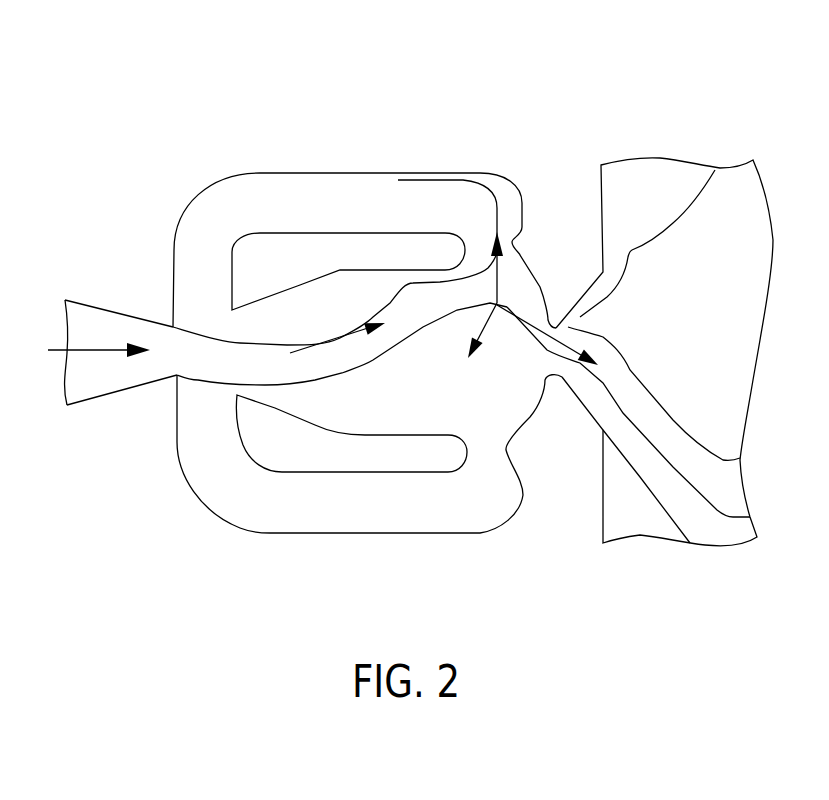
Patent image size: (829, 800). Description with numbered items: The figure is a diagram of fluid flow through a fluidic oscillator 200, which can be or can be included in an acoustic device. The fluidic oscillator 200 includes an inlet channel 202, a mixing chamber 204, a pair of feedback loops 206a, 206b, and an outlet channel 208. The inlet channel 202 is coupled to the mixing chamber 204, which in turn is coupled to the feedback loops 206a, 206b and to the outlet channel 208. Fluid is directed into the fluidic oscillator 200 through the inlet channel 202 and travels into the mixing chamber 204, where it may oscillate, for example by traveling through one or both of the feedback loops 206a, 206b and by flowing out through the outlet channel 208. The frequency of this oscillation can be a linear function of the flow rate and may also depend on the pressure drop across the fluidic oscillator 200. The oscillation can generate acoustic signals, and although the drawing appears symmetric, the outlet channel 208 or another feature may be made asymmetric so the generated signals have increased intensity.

The fluidic oscillator 200 is at (104, 103).
The inlet channel 202 is at (103, 392).
The mixing chamber 204 is at (273, 322).
The feedback loop 206a is at (342, 205).
The feedback loop 206b is at (328, 520).
The outlet channel 208 is at (585, 395).